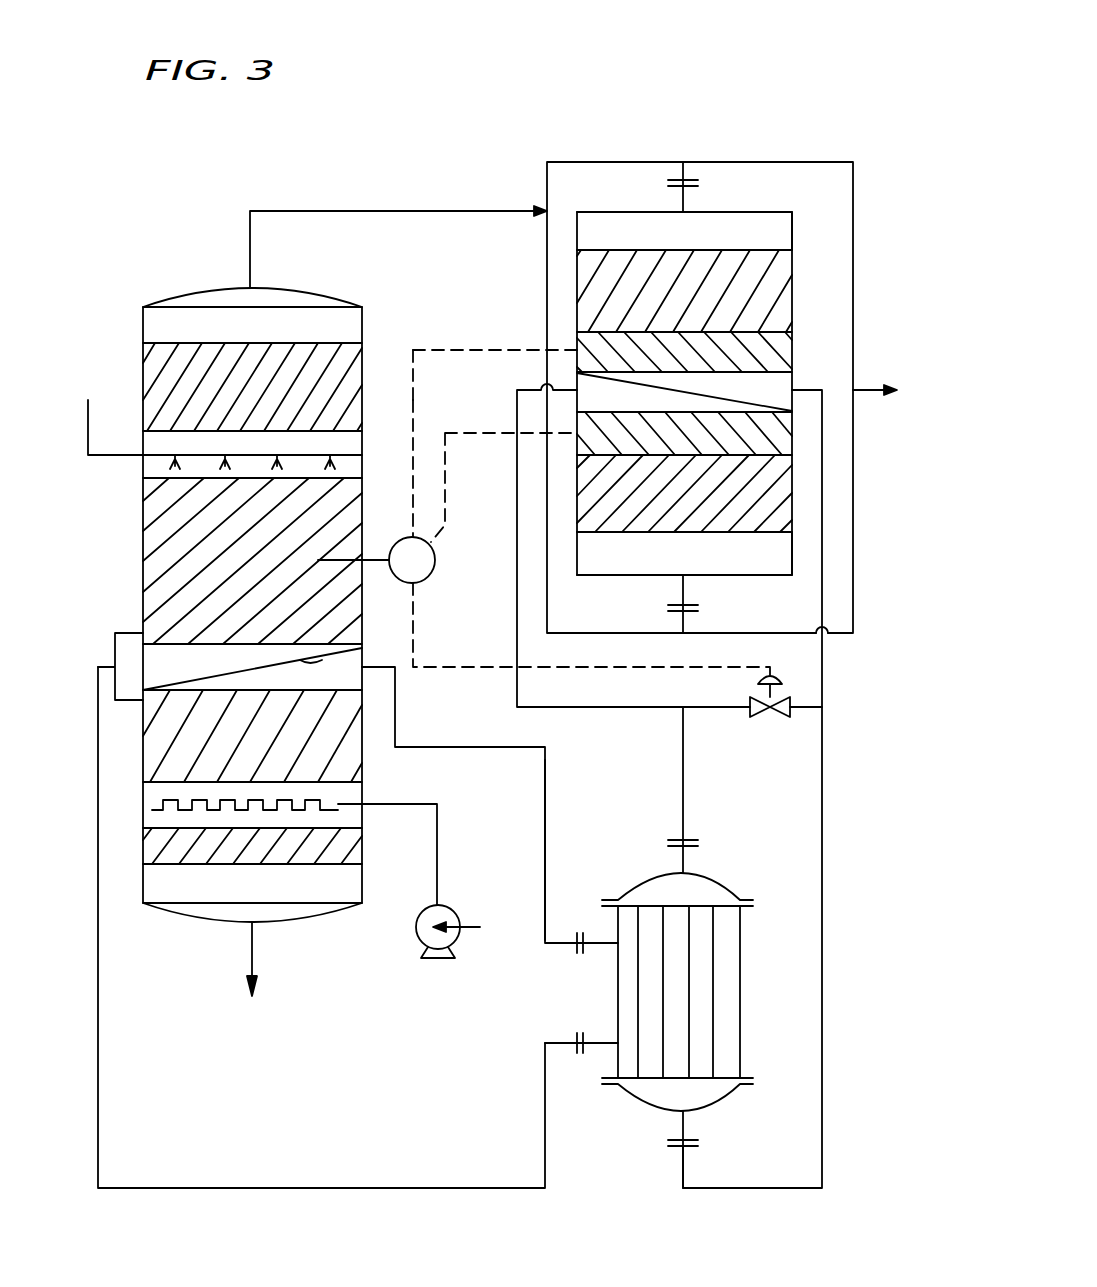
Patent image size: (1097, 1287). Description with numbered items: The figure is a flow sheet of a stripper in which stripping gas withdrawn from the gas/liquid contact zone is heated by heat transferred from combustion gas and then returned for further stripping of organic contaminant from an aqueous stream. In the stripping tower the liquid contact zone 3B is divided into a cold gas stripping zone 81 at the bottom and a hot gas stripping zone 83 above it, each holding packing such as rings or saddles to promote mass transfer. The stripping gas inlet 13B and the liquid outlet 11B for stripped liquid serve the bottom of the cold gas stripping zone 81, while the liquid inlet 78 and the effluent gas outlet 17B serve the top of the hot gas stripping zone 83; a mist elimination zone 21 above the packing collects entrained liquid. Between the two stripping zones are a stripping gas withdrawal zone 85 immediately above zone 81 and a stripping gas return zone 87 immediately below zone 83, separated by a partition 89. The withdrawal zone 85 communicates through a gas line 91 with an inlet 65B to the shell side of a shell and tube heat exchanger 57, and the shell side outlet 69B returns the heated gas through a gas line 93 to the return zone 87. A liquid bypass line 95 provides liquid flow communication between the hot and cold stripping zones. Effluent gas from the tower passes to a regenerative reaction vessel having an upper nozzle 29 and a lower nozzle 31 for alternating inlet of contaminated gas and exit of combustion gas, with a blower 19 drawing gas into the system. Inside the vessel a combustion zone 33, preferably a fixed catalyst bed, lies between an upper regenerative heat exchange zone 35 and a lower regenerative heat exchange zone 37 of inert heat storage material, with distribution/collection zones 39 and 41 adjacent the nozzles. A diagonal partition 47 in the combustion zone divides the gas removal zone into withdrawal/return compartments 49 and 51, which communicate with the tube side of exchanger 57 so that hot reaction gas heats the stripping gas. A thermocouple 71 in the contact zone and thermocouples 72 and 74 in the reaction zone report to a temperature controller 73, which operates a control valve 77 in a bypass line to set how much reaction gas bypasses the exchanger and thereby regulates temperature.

The liquid contact zone 3B is at (155, 566).
The liquid outlet 11B is at (252, 948).
The stripping gas inlet 13B is at (415, 808).
The effluent gas outlet 17B is at (250, 257).
The blower 19 is at (455, 945).
The mist elimination zone 21 is at (406, 354).
The upper nozzle 29 is at (698, 186).
The lower nozzle 31 is at (688, 610).
The combustion zone 33 is at (730, 340).
The regenerative heat exchange zone 35 is at (587, 268).
The regenerative heat exchange zone 37 is at (780, 497).
The distribution/collection zone 39 is at (768, 233).
The distribution/collection zone 41 is at (777, 560).
The diagonal partition 47 is at (700, 377).
The withdrawal/return compartment 49 is at (765, 392).
The withdrawal/return compartment 51 is at (595, 402).
The shell and tube heat exchanger 57 is at (742, 960).
The shell side inlet 65B is at (577, 952).
The shell side outlet 69B is at (577, 1053).
The thermocouple 71 is at (330, 560).
The thermocouple 72 is at (445, 348).
The temperature controller 73 is at (643, 545).
The thermocouple 74 is at (448, 430).
The control valve 77 is at (790, 695).
The liquid inlet 78 is at (123, 458).
The cold gas stripping zone 81 is at (343, 758).
The hot gas stripping zone 83 is at (347, 497).
The stripping gas withdrawal zone 85 is at (342, 675).
The stripping gas return zone 87 is at (253, 658).
The partition 89 is at (307, 662).
The gas line 91 is at (555, 937).
The gas line 93 is at (545, 1105).
The liquid bypass line 95 is at (123, 700).